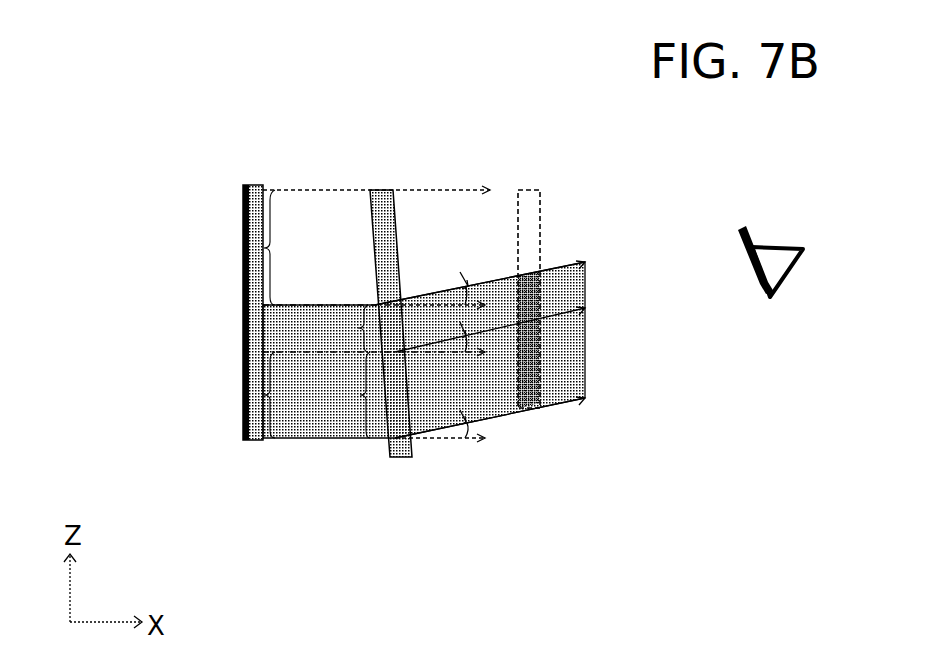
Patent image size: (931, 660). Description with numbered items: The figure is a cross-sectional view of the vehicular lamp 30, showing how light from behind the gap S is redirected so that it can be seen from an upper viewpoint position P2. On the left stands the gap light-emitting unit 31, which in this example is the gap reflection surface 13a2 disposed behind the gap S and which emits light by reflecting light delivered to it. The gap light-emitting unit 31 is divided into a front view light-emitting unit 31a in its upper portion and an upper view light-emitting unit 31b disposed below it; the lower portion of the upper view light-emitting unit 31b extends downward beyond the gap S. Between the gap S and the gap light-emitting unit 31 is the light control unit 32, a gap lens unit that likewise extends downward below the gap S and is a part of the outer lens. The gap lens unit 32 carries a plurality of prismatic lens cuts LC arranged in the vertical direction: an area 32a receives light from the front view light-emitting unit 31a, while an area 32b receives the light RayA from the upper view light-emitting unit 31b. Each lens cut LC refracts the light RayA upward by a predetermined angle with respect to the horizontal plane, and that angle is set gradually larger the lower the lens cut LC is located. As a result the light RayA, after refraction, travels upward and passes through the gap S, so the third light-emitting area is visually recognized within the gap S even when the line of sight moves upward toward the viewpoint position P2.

The gap light-emitting unit 31 is at (255, 185).
The gap reflection surface 13a2 is at (247, 276).
The front view light-emitting unit 31a is at (297, 247).
The upper view light-emitting unit 31b is at (296, 395).
The light control unit 32 is at (385, 190).
The area of the gap lens unit 32a is at (340, 328).
The area of the gap lens unit 32b is at (344, 395).
The vehicular lamp 30 is at (440, 118).
The gap S is at (538, 190).
The viewpoint position P2 is at (805, 247).
The light RayA is at (290, 440).
The lens cuts LC is at (372, 440).